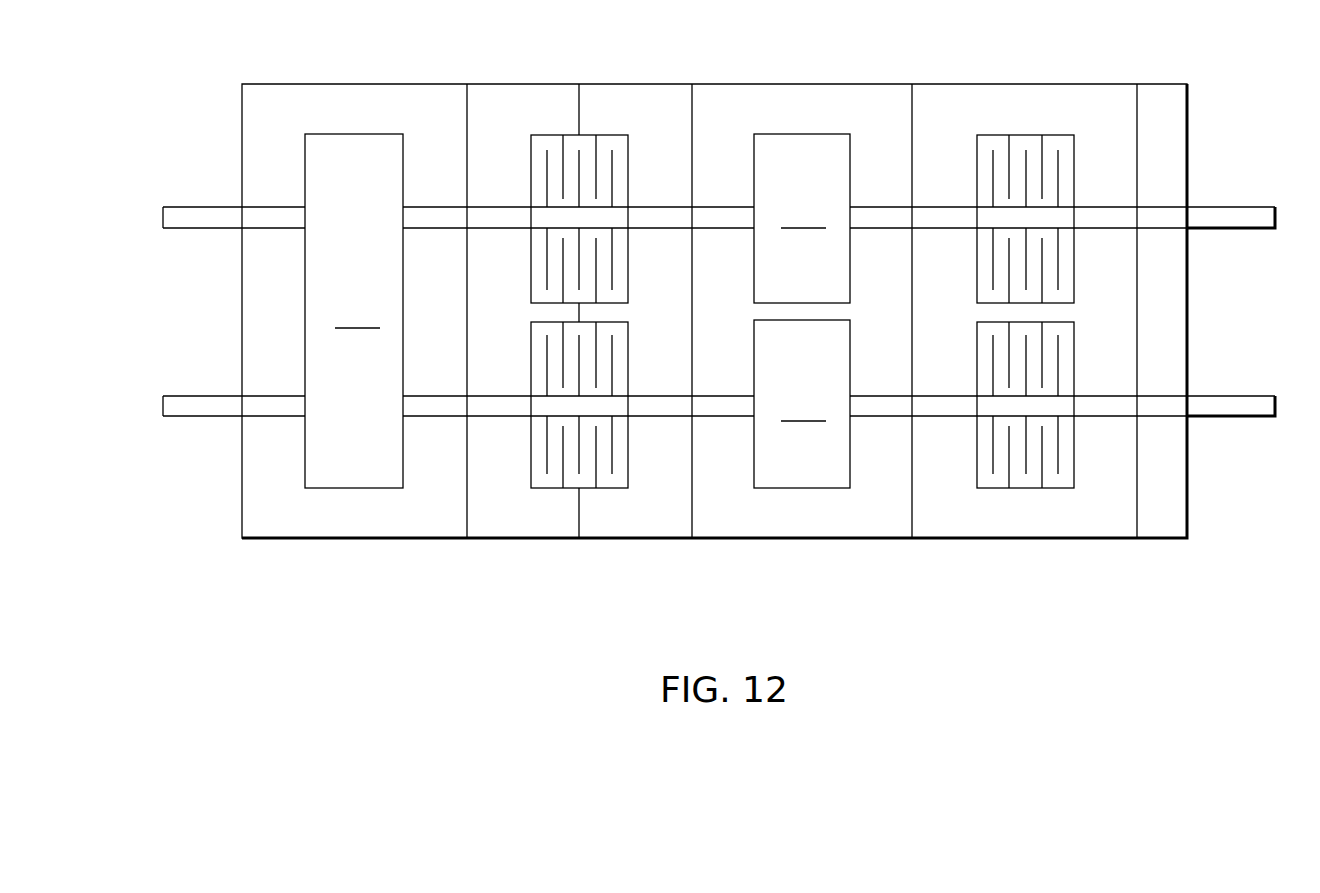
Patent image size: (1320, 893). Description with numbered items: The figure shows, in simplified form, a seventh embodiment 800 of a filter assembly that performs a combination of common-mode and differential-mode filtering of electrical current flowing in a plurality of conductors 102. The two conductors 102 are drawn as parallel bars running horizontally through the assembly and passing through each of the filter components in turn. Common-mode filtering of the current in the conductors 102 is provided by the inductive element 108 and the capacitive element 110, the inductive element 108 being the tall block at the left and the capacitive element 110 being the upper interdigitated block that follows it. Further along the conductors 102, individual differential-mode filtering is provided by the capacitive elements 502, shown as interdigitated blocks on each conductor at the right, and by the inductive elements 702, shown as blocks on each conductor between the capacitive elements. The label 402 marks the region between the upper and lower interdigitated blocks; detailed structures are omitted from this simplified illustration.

The conductors 102 is at (1277, 417).
The inductive element 108 is at (531, 480).
The capacitive element 110 is at (532, 143).
The gap between finger structures 402 is at (579, 313).
The capacitive elements 502 is at (1074, 146).
The inductive elements 702 is at (802, 311).
The filter assembly embodiment 800 is at (970, 562).